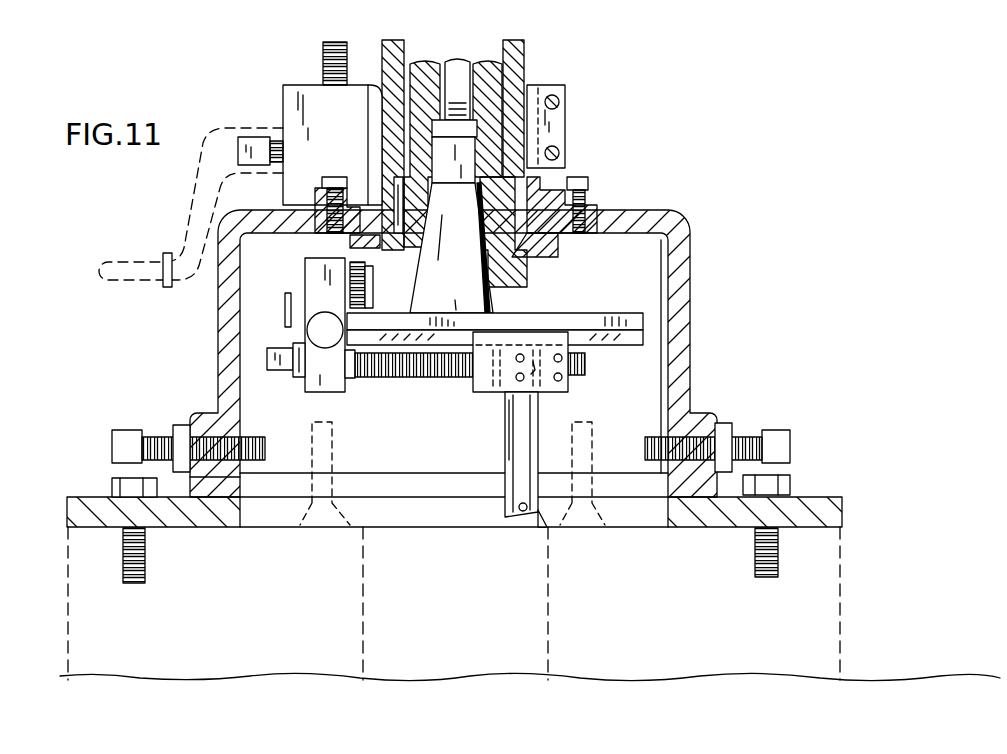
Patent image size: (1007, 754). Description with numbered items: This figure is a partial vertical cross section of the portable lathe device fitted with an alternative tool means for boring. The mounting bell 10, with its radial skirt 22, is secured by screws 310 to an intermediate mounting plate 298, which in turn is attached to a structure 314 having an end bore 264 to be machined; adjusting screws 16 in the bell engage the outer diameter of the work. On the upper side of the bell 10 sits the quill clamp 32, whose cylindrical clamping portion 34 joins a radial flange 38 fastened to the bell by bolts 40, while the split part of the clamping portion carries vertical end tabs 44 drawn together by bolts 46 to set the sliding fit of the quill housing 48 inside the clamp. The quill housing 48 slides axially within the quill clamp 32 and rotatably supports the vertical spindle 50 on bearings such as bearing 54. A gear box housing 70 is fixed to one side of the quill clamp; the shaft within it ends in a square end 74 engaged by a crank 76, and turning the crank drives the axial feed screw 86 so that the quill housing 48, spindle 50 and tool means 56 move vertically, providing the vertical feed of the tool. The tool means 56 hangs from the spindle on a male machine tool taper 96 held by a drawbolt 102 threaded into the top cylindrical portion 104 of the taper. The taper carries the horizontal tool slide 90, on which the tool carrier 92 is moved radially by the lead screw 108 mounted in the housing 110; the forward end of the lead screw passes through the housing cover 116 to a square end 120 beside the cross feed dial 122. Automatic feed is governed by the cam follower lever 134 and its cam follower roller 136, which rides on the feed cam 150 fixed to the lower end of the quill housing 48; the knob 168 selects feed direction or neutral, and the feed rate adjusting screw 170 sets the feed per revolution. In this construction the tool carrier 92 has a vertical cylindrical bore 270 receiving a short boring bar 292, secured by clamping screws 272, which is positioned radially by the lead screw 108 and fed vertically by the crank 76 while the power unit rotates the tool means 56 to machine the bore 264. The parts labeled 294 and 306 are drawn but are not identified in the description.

The mounting bell 10 is at (690, 262).
The mounting screws 16 is at (130, 430).
The radial skirt 22 is at (706, 420).
The quill clamp 32 is at (585, 82).
The cylindrical clamping portion 34 is at (383, 112).
The radial flange 38 is at (600, 205).
The bolts 40 is at (322, 182).
The vertical end tabs 44 is at (568, 134).
The bolts 46 is at (560, 102).
The quill housing 48 is at (525, 52).
The spindle 50 is at (425, 58).
The bearing 54 is at (395, 195).
The tool means 56 is at (600, 370).
The gear box housing 70 is at (290, 100).
The square end 74 is at (252, 148).
The crank 76 is at (128, 280).
The axial feed screw 86 is at (323, 52).
The tool slide 90 is at (584, 313).
The tool carrier 92 is at (485, 392).
The machine tool taper 96 is at (440, 288).
The drawbolt 102 is at (458, 60).
The top cylindrical portion 104 is at (440, 162).
The lead screw 108 is at (415, 377).
The housing 110 is at (310, 268).
The housing cover 116 is at (305, 285).
The square end 120 is at (270, 352).
The cross feed dial 122 is at (295, 374).
The cam follower lever 134 is at (410, 307).
The cam follower roller 136 is at (357, 262).
The feed cam 150 is at (560, 245).
The knob 168 is at (286, 302).
The feed rate adjusting screw 170 is at (313, 340).
The end bore 264 is at (548, 618).
The vertical cylindrical bore 270 is at (558, 382).
The clamping screws 272 is at (516, 373).
The boring bar 292 is at (505, 457).
The wedge tip 294 is at (540, 528).
The intermediate mounting plate 298 is at (68, 508).
The bolt head 306 is at (112, 485).
The screws 310 is at (333, 485).
The structure 314 is at (840, 594).